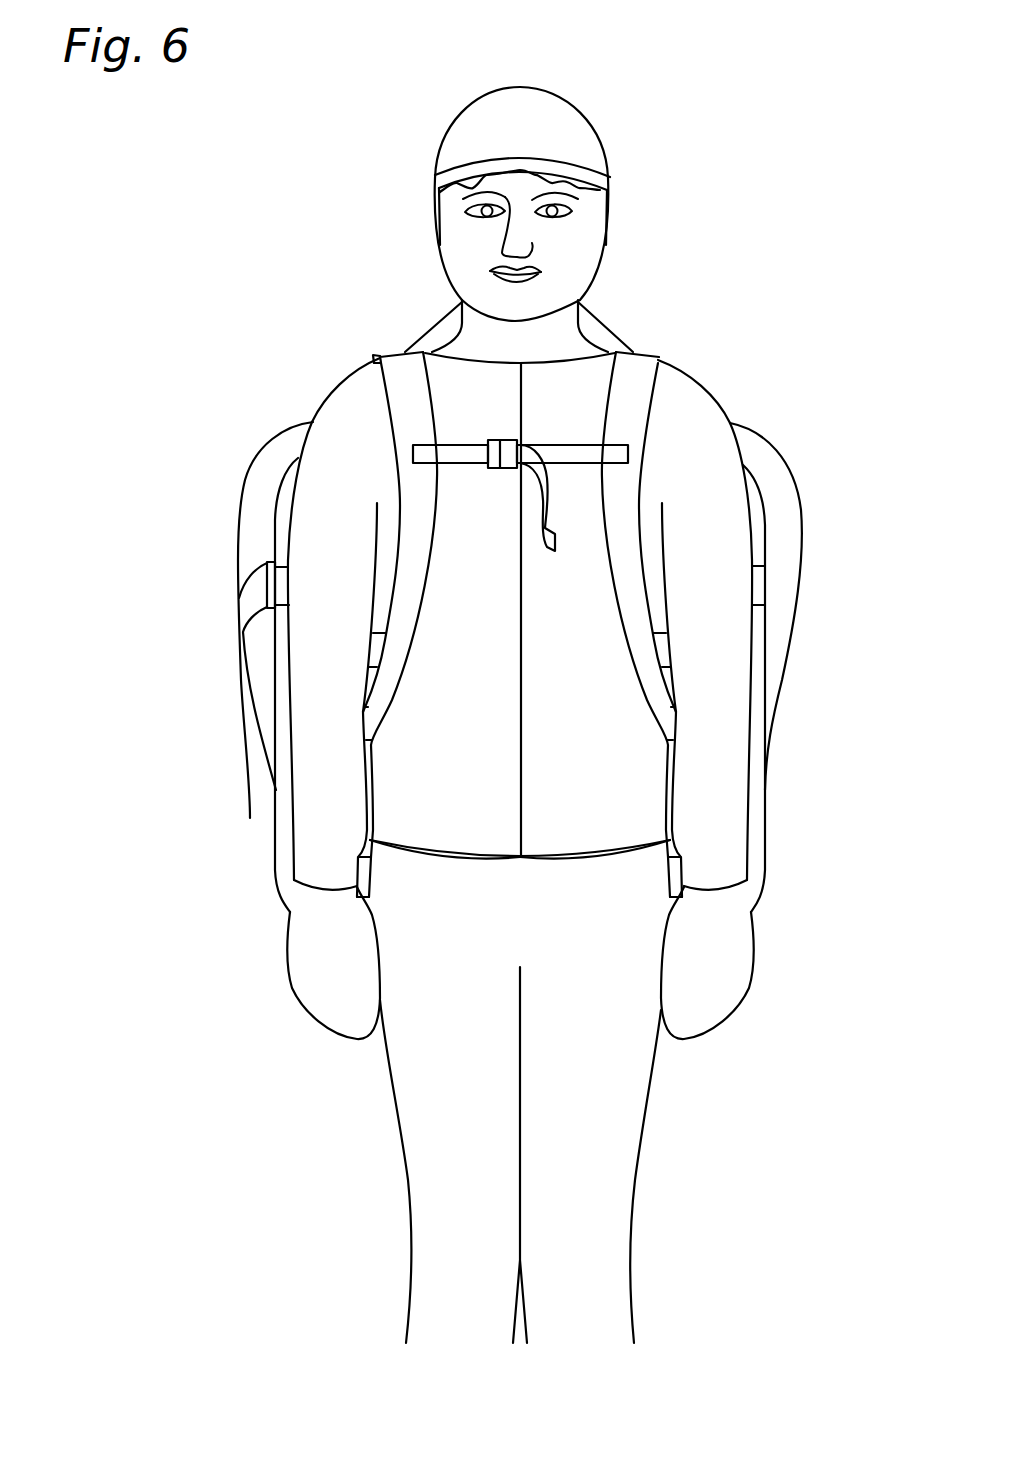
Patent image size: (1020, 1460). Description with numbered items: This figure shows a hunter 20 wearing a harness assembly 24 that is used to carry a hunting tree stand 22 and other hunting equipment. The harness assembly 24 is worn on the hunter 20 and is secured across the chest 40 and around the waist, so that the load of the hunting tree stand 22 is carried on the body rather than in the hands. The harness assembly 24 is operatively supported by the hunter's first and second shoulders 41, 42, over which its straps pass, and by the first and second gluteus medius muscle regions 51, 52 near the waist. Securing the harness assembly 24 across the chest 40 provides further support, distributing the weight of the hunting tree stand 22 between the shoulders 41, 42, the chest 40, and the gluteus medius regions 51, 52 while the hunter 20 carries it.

The hunter 20 is at (600, 125).
The hunting tree stand 22 is at (770, 472).
The harness assembly 24 is at (398, 348).
The chest 40 is at (462, 423).
The shoulder 41 is at (687, 395).
The shoulder 42 is at (360, 383).
The gluteus medius muscle region 51 is at (648, 862).
The gluteus medius muscle region 52 is at (388, 870).